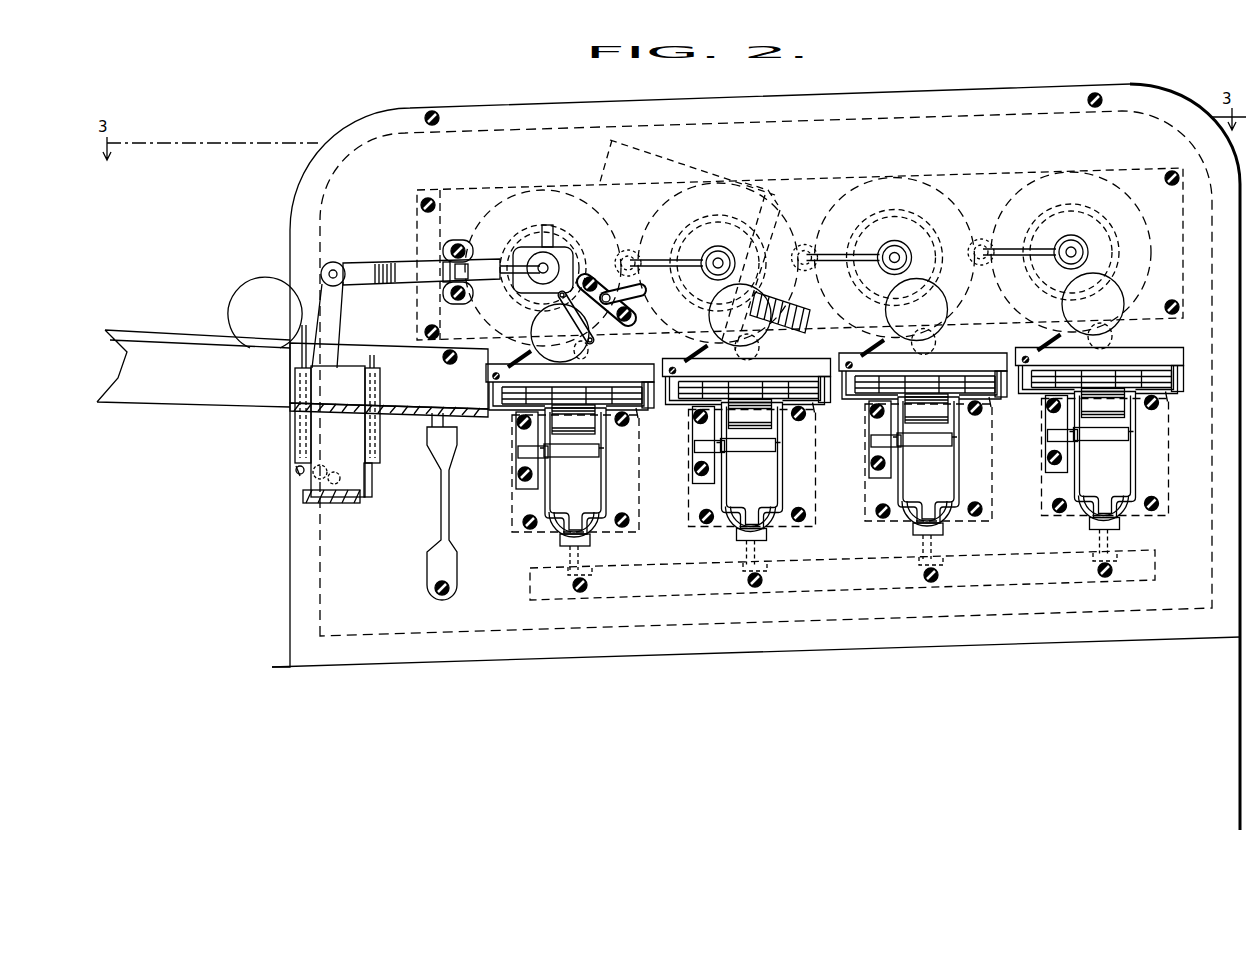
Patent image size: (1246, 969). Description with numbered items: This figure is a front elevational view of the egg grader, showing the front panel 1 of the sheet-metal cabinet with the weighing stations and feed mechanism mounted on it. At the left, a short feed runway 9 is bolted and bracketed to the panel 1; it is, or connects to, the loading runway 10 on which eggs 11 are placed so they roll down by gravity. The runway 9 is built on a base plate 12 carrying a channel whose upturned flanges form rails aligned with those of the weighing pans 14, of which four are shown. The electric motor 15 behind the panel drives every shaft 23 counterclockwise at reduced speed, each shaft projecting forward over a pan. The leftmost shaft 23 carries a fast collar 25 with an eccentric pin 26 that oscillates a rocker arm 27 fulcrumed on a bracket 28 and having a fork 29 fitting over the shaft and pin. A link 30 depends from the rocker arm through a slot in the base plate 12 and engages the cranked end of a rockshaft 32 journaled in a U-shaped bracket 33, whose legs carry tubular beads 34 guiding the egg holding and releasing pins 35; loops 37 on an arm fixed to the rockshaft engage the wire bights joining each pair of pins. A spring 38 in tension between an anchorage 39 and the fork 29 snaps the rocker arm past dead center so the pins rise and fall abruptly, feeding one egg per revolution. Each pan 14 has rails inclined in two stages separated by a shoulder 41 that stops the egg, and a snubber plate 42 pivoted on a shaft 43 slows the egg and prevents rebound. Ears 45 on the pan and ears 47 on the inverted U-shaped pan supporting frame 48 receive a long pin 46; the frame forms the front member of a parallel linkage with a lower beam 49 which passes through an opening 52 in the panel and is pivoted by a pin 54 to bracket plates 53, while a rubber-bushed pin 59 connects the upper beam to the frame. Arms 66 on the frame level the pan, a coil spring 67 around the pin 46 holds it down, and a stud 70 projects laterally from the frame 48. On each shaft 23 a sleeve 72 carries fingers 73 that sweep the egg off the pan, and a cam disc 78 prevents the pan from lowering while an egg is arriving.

The panel 1 is at (385, 640).
The feed runway 9 is at (392, 422).
The loading runway 10 is at (210, 405).
The egg 11 is at (264, 278).
The base plate 12 is at (410, 405).
The weighing pan 14 is at (570, 386).
The electric motor 15 is at (667, 160).
The shaft 23 is at (716, 258).
The collar 25 is at (565, 255).
The pin 26 is at (470, 282).
The rocker arm 27 is at (370, 262).
The bracket 28 is at (457, 240).
The fork 29 is at (540, 246).
The link 30 is at (345, 302).
The rockshaft 32 is at (334, 490).
The U-shaped bracket 33 is at (369, 463).
The tubular bead 34 is at (380, 386).
The egg holding and releasing pin 35 is at (304, 325).
The loop 37 is at (296, 472).
The spring 38 is at (562, 314).
The anchorage 39 is at (615, 266).
The shoulder 41 is at (588, 385).
The snubber plate 42 is at (530, 352).
The shaft 43 is at (490, 378).
The ear 45 is at (820, 412).
The pin 46 is at (648, 410).
The ear 47 is at (495, 410).
The pan supporting frame 48 is at (606, 465).
The lower beam 49 is at (580, 510).
The opening 52 is at (595, 532).
The bracket plate 53 is at (512, 500).
The pin 54 is at (560, 530).
The pin 59 is at (600, 415).
The arm 66 is at (628, 396).
The coil spring 67 is at (535, 370).
The stud 70 is at (520, 450).
The sleeve 72 is at (724, 257).
The finger 73 is at (506, 255).
The cam disc 78 is at (537, 187).